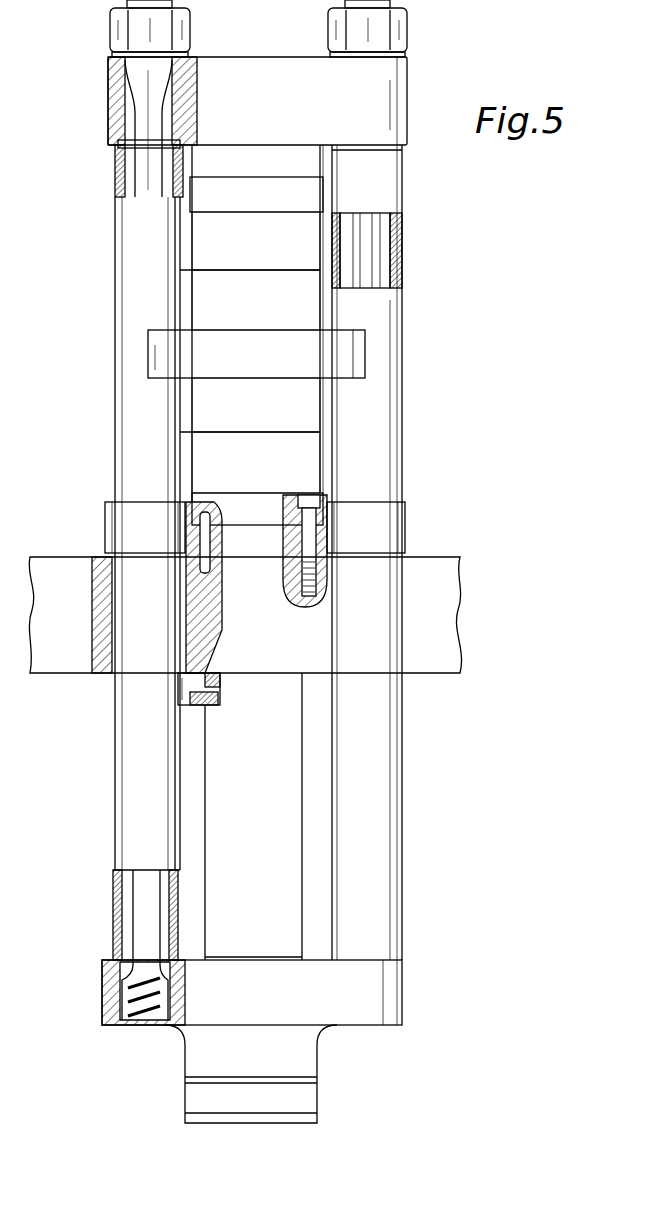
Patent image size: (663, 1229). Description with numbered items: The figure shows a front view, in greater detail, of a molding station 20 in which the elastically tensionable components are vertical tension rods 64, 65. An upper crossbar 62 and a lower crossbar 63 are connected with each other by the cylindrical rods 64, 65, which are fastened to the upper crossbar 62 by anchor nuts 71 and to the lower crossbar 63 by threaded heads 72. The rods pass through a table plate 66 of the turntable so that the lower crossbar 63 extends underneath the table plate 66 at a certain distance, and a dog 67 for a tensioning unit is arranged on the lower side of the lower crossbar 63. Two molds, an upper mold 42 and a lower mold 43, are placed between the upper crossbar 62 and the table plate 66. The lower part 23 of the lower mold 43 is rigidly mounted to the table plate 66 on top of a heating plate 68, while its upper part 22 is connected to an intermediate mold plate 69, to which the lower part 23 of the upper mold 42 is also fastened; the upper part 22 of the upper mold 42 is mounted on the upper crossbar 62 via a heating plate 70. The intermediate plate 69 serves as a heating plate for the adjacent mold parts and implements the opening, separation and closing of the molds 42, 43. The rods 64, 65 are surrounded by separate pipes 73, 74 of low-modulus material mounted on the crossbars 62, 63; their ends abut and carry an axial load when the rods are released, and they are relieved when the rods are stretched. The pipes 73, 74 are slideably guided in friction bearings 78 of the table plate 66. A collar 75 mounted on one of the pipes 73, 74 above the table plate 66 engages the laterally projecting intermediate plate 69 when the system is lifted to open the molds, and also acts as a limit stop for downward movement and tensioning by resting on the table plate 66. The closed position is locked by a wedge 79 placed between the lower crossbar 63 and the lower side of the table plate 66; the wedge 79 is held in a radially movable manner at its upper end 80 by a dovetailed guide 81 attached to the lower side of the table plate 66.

The molding station 20 is at (432, 344).
The upper part 22 is at (231, 237).
The lower part 23 is at (231, 309).
The upper mold 42 is at (178, 273).
The lower mold 43 is at (178, 433).
The upper crossbar 62 is at (242, 78).
The lower crossbar 63 is at (367, 993).
The tension rod 64 is at (150, 107).
The tension rod 65 is at (370, 240).
The table plate 66 is at (423, 613).
The dog 67 is at (300, 1050).
The heating plate 68 is at (248, 510).
The intermediate mold plate 69 is at (362, 368).
The heating plate 70 is at (323, 190).
The anchor nut 71 is at (142, 25).
The threaded head 72 is at (137, 995).
The pipe 73 is at (125, 172).
The pipe 74 is at (395, 278).
The collar 75 is at (128, 527).
The friction bearing 78 is at (110, 643).
The wedge 79 is at (286, 864).
The upper end 80 is at (288, 710).
The dovetailed guide 81 is at (183, 713).